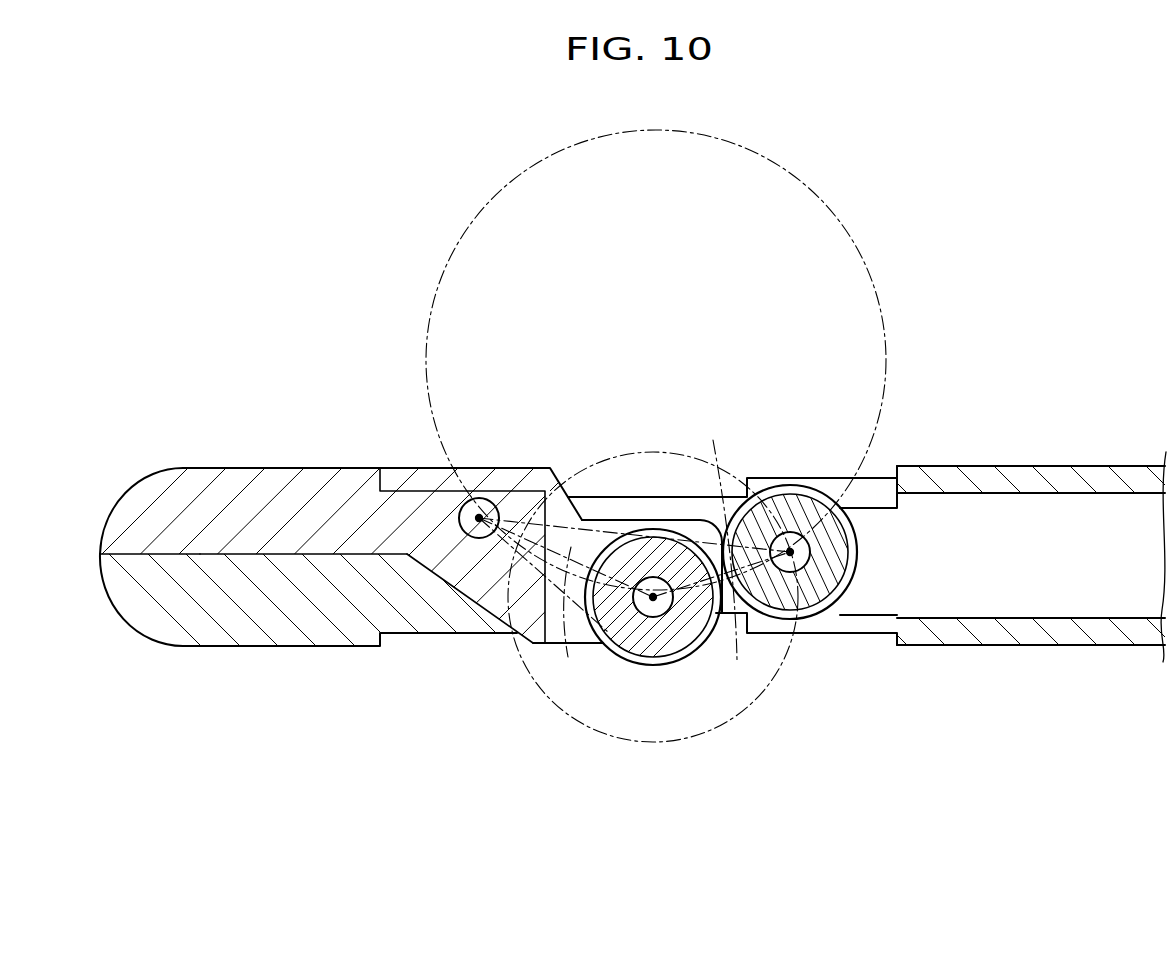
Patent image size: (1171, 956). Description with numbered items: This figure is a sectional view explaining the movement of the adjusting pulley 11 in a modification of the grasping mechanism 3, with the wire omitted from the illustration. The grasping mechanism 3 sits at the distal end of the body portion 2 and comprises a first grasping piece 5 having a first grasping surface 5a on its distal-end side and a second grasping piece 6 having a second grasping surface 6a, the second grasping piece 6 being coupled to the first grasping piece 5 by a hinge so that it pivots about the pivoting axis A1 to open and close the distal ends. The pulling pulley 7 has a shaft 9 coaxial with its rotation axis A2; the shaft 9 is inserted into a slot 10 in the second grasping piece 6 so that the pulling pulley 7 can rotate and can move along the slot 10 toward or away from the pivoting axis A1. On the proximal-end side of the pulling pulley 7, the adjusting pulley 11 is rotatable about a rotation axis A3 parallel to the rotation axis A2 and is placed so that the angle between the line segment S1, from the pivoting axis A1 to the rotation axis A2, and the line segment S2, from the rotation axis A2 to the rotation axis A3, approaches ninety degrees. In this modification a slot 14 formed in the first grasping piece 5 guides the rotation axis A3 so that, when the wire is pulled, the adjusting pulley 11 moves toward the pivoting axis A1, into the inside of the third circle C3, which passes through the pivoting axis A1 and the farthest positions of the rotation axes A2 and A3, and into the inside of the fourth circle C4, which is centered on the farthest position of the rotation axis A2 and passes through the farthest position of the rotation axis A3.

The body portion 2 is at (1047, 467).
The grasping mechanism 3 is at (210, 322).
The first grasping piece 5 is at (222, 648).
The first grasping surface 5a is at (316, 552).
The second grasping piece 6 is at (283, 468).
The second grasping surface 6a is at (132, 556).
The pulling pulley 7 is at (638, 657).
The shaft 9 is at (670, 610).
The slot 10 is at (630, 568).
The adjusting pulley 11 is at (857, 552).
The slot 14 is at (738, 500).
The pivoting axis A1 is at (479, 518).
The rotation axis A2 is at (653, 597).
The rotation axis A3 is at (790, 552).
The third circle C3 is at (430, 310).
The fourth circle C4 is at (758, 700).
The line segment S1 is at (565, 621).
The line segment S2 is at (732, 563).